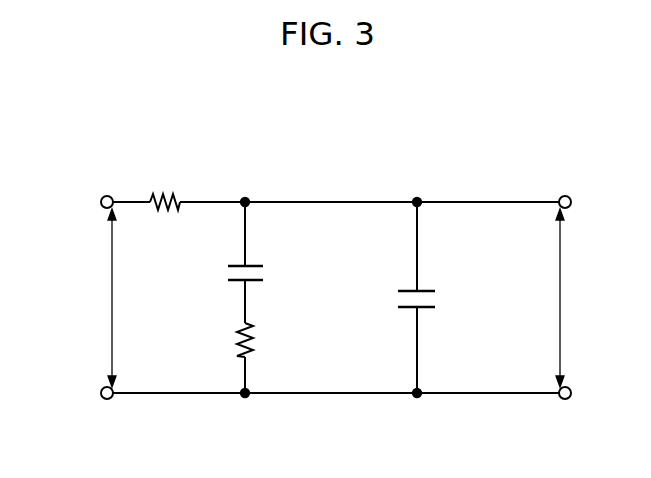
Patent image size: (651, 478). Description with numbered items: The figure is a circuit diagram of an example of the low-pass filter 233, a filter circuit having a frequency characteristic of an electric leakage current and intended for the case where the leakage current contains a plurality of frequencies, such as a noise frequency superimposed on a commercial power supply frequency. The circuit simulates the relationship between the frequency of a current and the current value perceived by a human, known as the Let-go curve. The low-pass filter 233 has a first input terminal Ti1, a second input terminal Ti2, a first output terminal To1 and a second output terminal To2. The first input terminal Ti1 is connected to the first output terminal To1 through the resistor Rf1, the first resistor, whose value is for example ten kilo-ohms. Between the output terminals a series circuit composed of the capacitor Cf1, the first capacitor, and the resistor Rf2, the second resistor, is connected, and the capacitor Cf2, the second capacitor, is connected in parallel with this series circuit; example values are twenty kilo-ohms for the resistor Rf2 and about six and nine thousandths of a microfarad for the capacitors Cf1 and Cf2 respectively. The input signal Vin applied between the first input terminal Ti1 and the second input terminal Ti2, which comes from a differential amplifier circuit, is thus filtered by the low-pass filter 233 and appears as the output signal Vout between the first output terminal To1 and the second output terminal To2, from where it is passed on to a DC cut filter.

The low-pass filter 233 is at (478, 175).
The first input terminal Ti1 is at (103, 197).
The second input terminal Ti2 is at (103, 398).
The first output terminal To1 is at (571, 198).
The second output terminal To2 is at (571, 398).
The resistor Rf1 is at (173, 195).
The resistor Rf2 is at (257, 339).
The capacitor Cf1 is at (259, 265).
The capacitor Cf2 is at (431, 291).
The input voltage Vin is at (94, 298).
The output voltage Vout is at (582, 298).